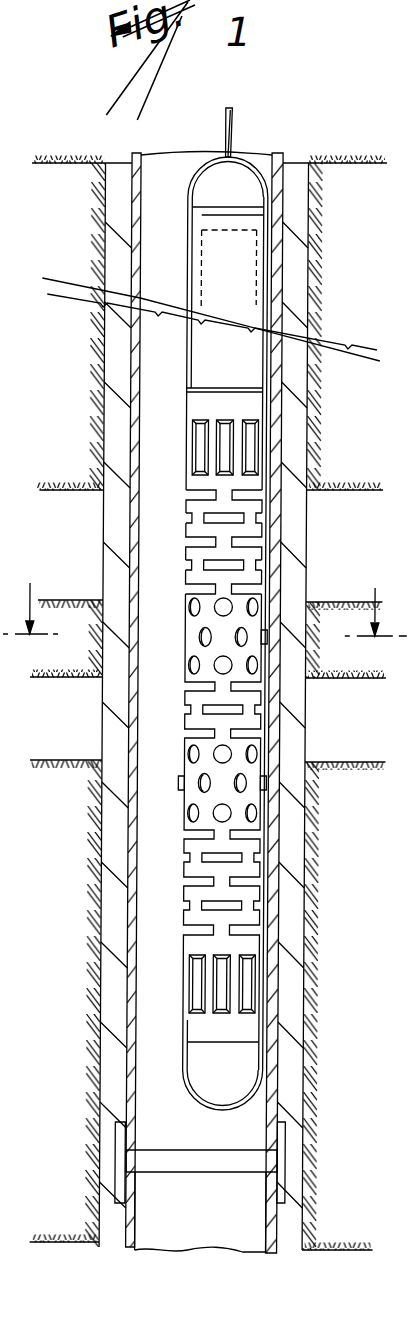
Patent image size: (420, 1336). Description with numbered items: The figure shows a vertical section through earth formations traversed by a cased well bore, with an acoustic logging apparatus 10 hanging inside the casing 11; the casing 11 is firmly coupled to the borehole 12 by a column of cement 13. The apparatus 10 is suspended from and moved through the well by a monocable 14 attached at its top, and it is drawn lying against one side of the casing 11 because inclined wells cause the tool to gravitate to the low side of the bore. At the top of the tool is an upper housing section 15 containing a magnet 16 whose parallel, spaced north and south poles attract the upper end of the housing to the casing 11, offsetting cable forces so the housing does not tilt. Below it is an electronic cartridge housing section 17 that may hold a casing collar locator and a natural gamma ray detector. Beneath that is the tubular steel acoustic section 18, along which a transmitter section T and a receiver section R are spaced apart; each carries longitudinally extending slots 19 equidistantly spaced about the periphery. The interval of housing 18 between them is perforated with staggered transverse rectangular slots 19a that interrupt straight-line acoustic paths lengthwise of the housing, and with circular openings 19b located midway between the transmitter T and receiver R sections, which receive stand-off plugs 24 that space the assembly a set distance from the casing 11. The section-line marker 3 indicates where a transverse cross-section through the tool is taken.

The apparatus 10 is at (186, 693).
The casing 11 is at (142, 792).
The borehole 12 is at (119, 966).
The column of cement 13 is at (132, 873).
The monocable 14 is at (234, 119).
The upper housing section 15 is at (190, 208).
The magnet 16 is at (264, 258).
The electronic cartridge assembly 17 is at (199, 363).
The acoustic section 18 is at (268, 503).
The longitudinally extending slots 19 is at (228, 427).
The transverse rectangular slots 19a is at (235, 519).
The circular shaped openings 19b is at (222, 608).
The stand off plugs 24 is at (272, 638).
The transmitter section T is at (186, 448).
The receiver section R is at (267, 990).
The section line 3- 3 is at (205, 591).